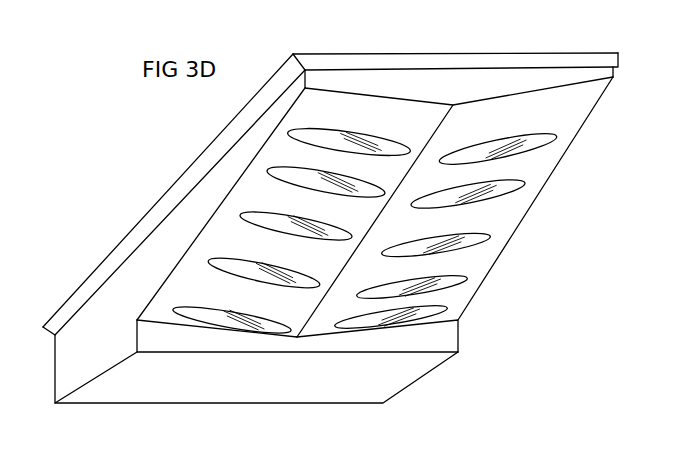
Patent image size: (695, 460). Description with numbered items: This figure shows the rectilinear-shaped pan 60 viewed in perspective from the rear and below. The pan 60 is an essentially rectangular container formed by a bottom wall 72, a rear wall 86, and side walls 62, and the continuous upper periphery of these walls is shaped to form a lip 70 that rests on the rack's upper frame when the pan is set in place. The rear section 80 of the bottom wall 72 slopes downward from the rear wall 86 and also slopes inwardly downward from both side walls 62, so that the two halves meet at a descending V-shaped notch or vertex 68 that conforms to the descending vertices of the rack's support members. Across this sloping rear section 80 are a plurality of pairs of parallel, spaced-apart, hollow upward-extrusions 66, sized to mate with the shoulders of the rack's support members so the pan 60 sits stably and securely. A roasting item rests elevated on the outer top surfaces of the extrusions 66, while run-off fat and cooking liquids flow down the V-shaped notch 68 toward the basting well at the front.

The pan 60 is at (193, 152).
The side walls 62 is at (146, 250).
The hollow upward-extrusions 66 is at (330, 132).
The vertex 68 is at (425, 143).
The lip 70 is at (618, 53).
The bottom wall 72 is at (520, 117).
The rear section of bottom wall 80 is at (563, 107).
The rear wall 86 is at (408, 87).